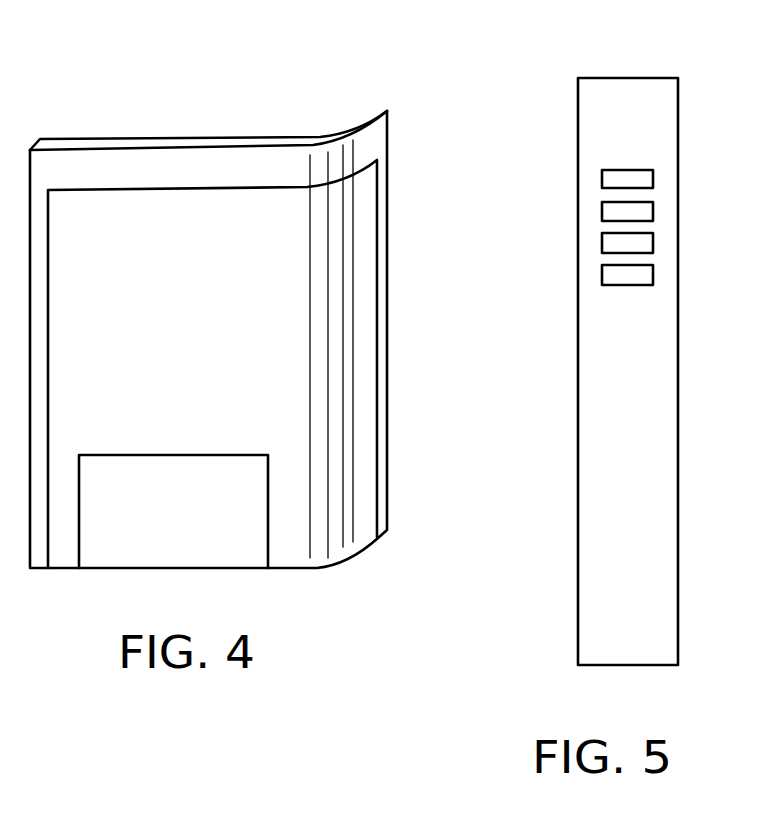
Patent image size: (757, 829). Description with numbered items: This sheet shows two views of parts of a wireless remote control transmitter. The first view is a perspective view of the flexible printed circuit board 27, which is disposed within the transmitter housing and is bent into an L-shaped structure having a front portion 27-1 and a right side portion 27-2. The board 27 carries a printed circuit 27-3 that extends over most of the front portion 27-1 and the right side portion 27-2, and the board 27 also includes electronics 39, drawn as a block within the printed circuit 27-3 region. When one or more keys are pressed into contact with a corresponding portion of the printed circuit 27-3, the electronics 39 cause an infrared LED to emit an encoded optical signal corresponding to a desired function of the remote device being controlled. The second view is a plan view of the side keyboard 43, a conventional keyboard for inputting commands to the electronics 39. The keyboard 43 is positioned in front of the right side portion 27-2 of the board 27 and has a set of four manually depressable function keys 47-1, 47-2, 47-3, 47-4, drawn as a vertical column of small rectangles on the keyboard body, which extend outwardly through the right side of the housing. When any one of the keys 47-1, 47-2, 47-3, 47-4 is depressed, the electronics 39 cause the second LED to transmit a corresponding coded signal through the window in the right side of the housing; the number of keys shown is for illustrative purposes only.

In FIG. 4, the flexible printed circuit board 27 is at (392, 423).
In FIG. 4, the front portion 27-1 is at (122, 168).
In FIG. 4, the right side portion 27-2 is at (370, 143).
In FIG. 4, the printed circuit 27-3 is at (160, 320).
In FIG. 4, the electronics 39 is at (176, 520).
In FIG. 5, the keyboard 43 is at (680, 140).
In FIG. 5, the function key 47-1 is at (646, 177).
In FIG. 5, the function key 47-2 is at (646, 210).
In FIG. 5, the function key 47-3 is at (646, 243).
In FIG. 5, the function key 47-4 is at (646, 276).